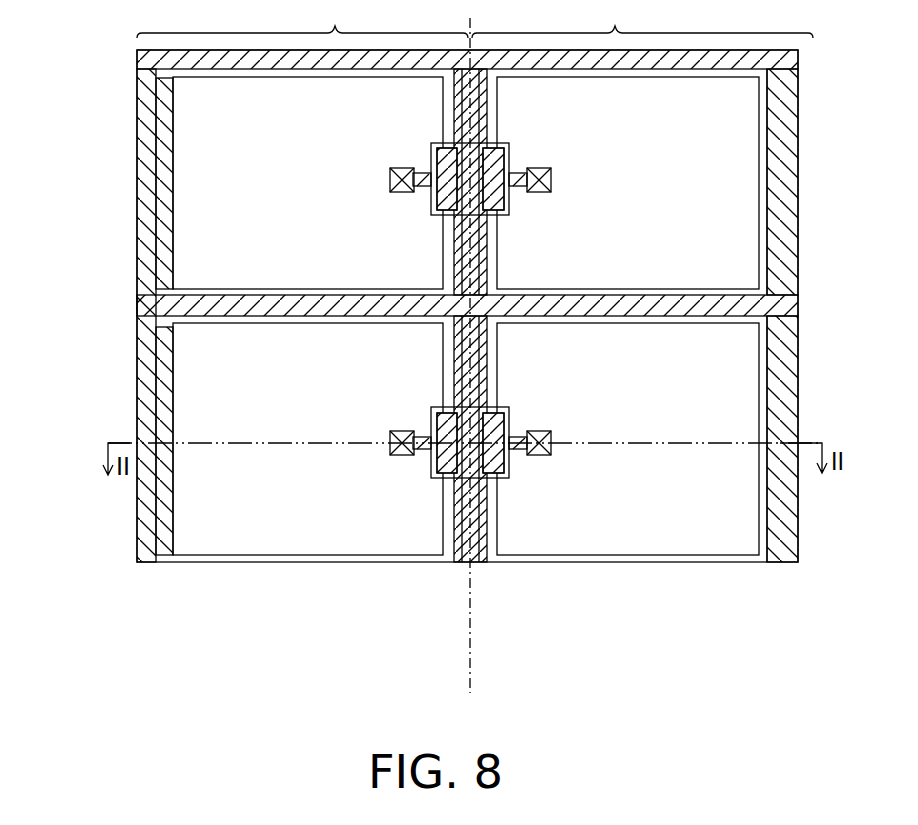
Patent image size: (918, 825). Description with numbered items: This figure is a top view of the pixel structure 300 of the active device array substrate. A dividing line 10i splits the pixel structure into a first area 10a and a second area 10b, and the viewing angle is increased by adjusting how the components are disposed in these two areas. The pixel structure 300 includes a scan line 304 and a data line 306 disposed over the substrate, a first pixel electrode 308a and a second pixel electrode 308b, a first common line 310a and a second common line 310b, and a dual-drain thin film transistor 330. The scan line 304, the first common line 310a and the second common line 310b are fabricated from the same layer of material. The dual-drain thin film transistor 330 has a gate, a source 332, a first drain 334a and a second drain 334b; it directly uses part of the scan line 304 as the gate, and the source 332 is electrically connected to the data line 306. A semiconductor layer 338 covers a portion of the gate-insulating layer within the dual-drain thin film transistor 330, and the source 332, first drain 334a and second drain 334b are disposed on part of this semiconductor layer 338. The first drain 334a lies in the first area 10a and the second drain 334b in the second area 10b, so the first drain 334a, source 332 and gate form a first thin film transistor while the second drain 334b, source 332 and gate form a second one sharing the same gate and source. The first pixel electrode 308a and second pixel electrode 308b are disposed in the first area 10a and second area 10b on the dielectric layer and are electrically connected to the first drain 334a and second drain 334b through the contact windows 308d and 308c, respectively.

The first area 10a is at (302, 19).
The second area 10b is at (642, 19).
The boundary line between pixel regions 10i is at (475, 364).
The pixel structure 300 is at (84, 565).
The scan line 304 is at (457, 550).
The data line 306 is at (797, 307).
The first pixel electrode 308a is at (412, 547).
The second pixel electrode 308b is at (732, 543).
The contact window 308c is at (539, 455).
The contact window 308d is at (400, 457).
The first common line 310a is at (163, 562).
The second common line 310b is at (785, 562).
The dual-drain thin film transistor 330 is at (504, 487).
The source 332 is at (482, 550).
The first drain 334a is at (430, 464).
The second drain 334b is at (510, 458).
The semiconductor layer 338 is at (432, 457).